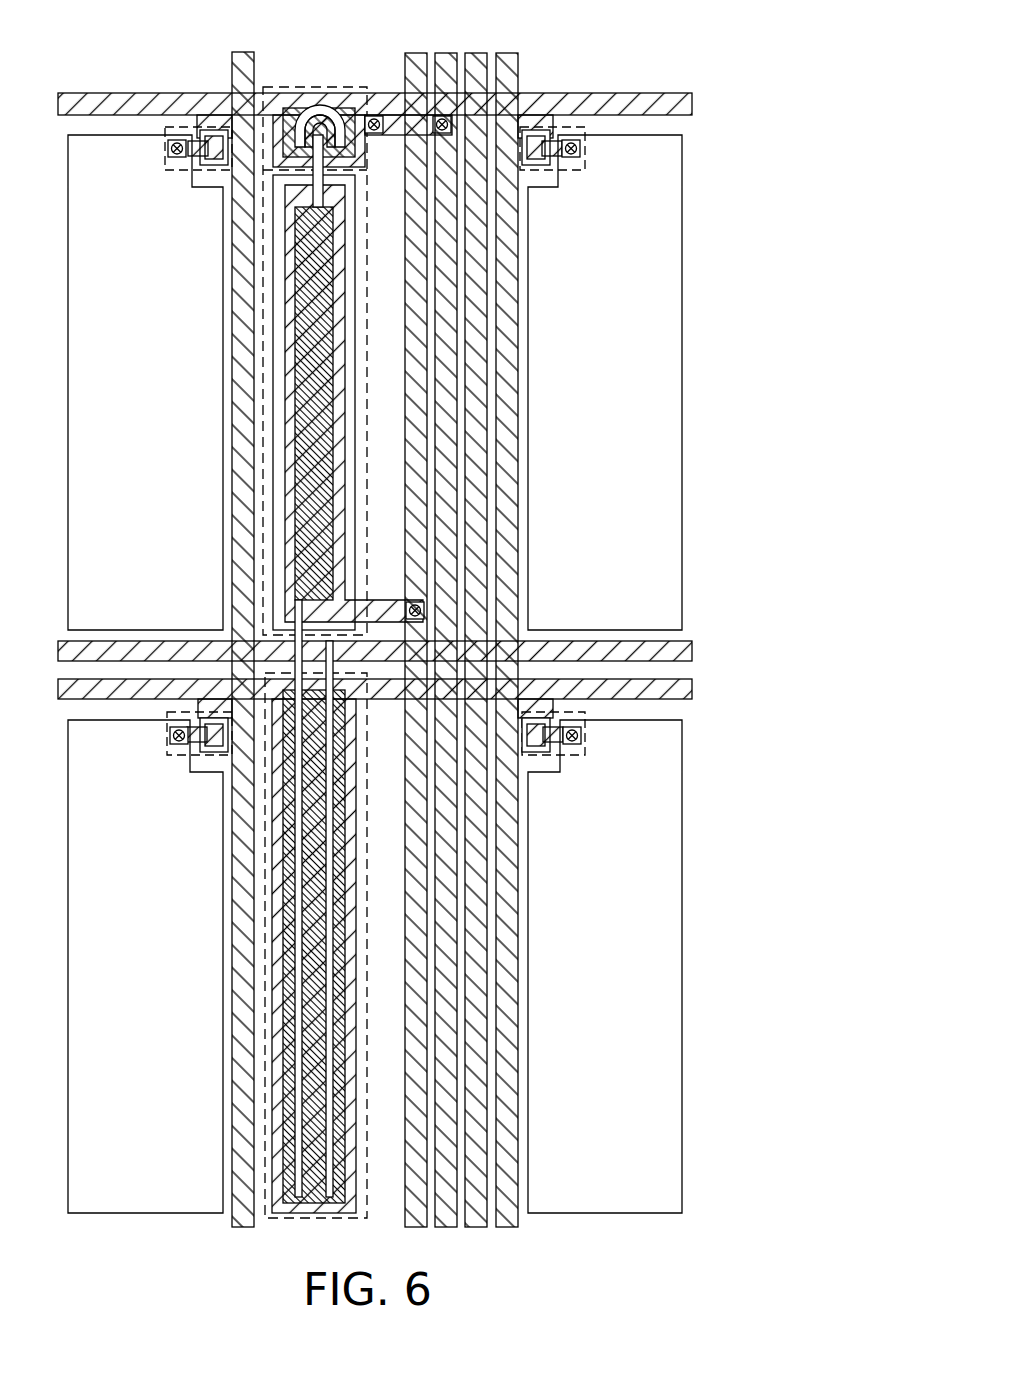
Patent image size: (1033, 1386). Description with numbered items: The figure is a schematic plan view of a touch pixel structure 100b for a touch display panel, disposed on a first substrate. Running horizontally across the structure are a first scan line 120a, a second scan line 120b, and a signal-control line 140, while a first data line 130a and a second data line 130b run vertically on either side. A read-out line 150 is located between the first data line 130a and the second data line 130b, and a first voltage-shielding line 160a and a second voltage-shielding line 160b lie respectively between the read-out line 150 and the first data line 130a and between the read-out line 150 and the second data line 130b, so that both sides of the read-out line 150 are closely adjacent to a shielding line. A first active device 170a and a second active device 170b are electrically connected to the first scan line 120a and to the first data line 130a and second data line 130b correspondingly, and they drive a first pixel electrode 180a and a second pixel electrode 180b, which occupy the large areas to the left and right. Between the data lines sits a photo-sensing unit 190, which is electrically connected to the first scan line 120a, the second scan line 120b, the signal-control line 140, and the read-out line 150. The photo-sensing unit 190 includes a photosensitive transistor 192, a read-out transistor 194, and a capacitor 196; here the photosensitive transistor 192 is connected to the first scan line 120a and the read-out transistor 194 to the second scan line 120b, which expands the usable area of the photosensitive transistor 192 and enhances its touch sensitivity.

The touch pixel structure 100b is at (720, 1253).
The first scan line 120a is at (692, 103).
The second scan line 120b is at (692, 689).
The first data line 130a is at (243, 64).
The second data line 130b is at (518, 58).
The signal-control line 140 is at (692, 651).
The read-out line 150 is at (445, 72).
The first voltage-shielding line 160a is at (413, 72).
The second voltage-shielding line 160b is at (476, 80).
The first active device 170a is at (185, 125).
The second active device 170b is at (570, 125).
The first pixel electrode 180a is at (120, 133).
The second pixel electrode 180b is at (612, 133).
The photo-sensing unit 190 is at (525, 654).
The photosensitive transistor 192 is at (278, 1241).
The read-out transistor 194 is at (280, 86).
The capacitor 196 is at (377, 113).